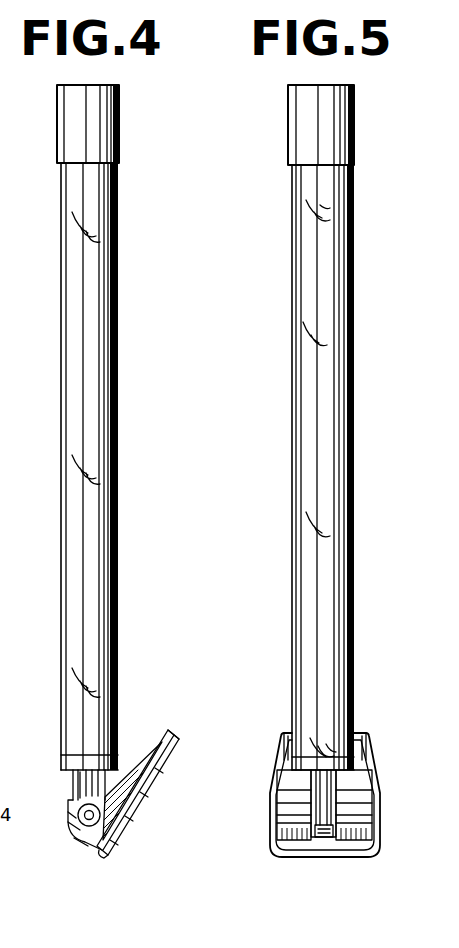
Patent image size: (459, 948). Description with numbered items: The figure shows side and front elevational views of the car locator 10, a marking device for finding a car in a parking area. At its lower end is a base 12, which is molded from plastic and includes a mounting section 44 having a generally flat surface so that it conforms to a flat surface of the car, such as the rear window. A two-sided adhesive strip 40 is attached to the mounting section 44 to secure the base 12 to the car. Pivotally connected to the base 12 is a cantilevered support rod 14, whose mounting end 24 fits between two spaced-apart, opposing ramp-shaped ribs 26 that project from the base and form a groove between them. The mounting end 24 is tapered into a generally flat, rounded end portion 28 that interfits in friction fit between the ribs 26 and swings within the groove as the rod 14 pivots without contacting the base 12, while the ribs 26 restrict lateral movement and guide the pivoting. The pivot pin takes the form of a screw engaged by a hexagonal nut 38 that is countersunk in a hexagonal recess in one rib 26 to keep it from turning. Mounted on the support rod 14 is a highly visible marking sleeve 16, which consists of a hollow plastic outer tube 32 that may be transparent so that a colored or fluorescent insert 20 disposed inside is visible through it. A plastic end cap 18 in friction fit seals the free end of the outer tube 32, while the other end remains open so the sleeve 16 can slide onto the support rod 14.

In FIG. 4, the car locator 10 is at (43, 138).
In FIG. 5, the car locator 10 is at (268, 142).
In FIG. 4, the base 12 is at (56, 828).
In FIG. 5, the base 12 is at (303, 877).
In FIG. 4, the support rod 14 is at (55, 776).
In FIG. 4, the sleeve 16 is at (130, 204).
In FIG. 5, the sleeve 16 is at (372, 210).
In FIG. 4, the end cap 18 is at (119, 128).
In FIG. 5, the end cap 18 is at (355, 128).
In FIG. 4, the insert 20 is at (105, 398).
In FIG. 5, the insert 20 is at (339, 401).
In FIG. 4, the mounting end 24 is at (78, 787).
In FIG. 5, the mounting end 24 is at (320, 790).
In FIG. 4, the ramp-shaped ribs 26 is at (120, 748).
In FIG. 5, the ramp-shaped ribs 26 is at (292, 803).
In FIG. 5, the end portion 28 is at (326, 840).
In FIG. 4, the outer tube 32 is at (118, 322).
In FIG. 5, the outer tube 32 is at (352, 322).
In FIG. 4, the hexagonal nut 38 is at (80, 835).
In FIG. 4, the two-sided adhesive strip 40 is at (146, 800).
In FIG. 4, the mounting section 44 is at (176, 735).